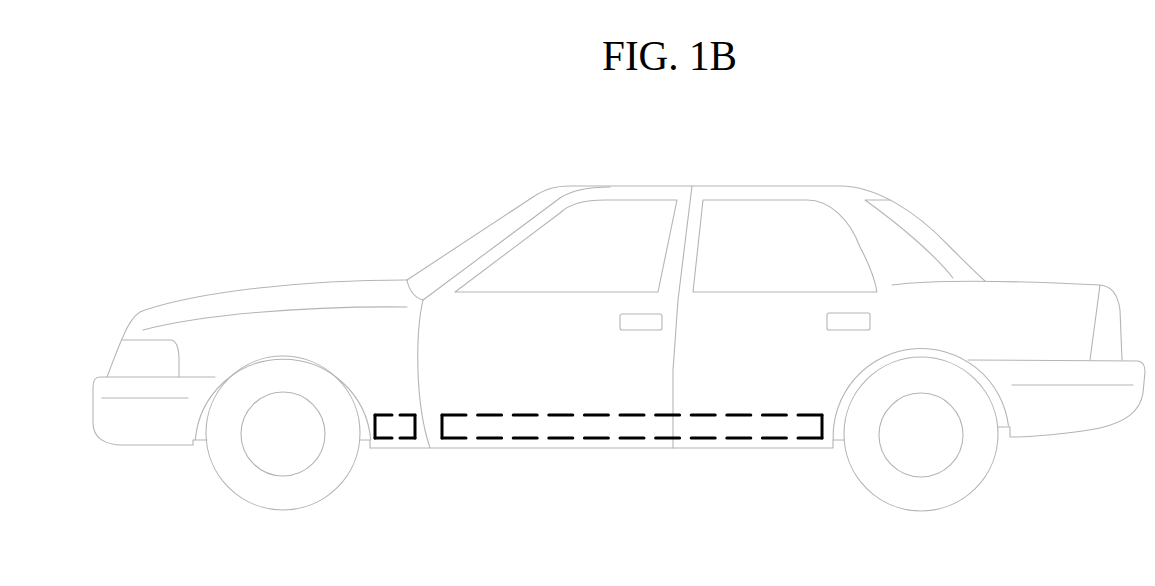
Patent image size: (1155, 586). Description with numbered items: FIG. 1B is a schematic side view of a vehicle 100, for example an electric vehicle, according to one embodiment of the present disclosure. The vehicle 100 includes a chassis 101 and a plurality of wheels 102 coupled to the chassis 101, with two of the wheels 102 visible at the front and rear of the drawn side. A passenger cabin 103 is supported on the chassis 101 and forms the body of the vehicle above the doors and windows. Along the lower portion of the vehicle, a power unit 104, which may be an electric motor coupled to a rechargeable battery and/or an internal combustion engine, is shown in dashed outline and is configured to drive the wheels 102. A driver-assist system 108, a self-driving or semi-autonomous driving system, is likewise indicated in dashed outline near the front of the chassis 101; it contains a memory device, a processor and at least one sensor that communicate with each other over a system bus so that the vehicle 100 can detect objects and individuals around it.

The vehicle 100 is at (935, 156).
The chassis 101 is at (692, 448).
The wheels 102 is at (233, 492).
The passenger cabin 103 is at (713, 192).
The power unit 104 is at (632, 427).
The driver-assist system 108 is at (397, 428).